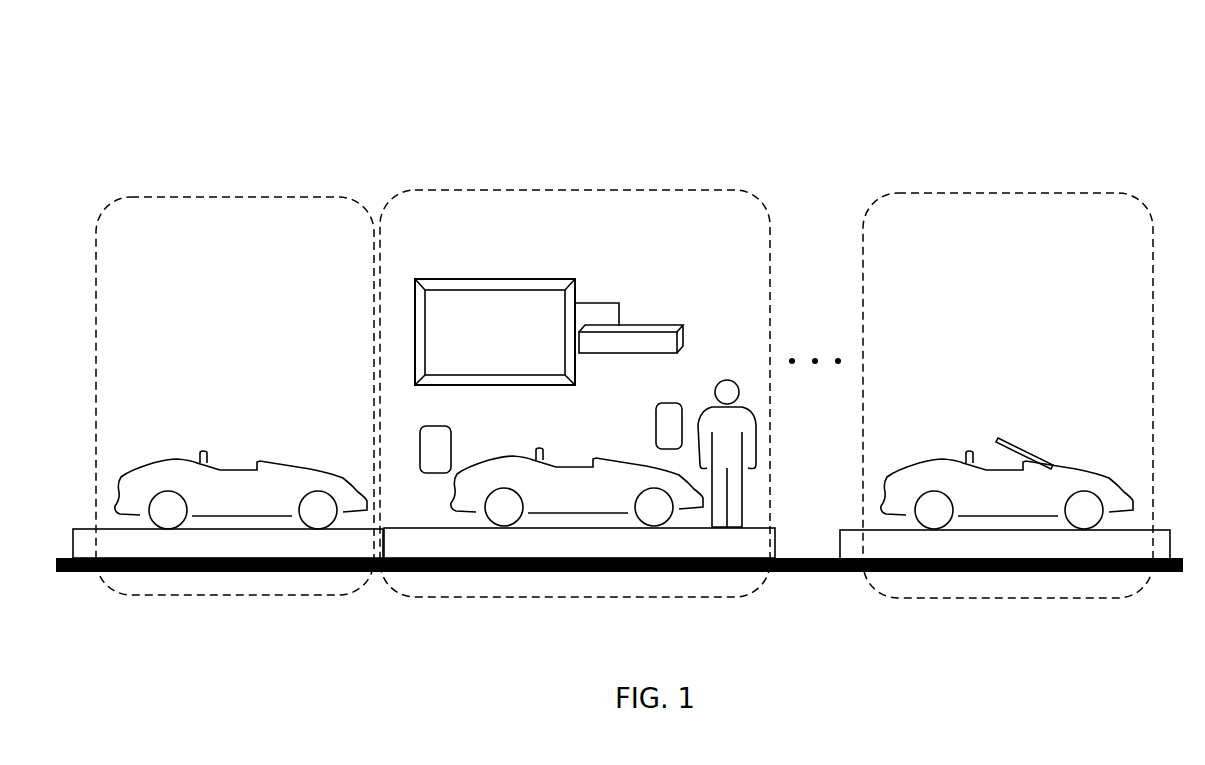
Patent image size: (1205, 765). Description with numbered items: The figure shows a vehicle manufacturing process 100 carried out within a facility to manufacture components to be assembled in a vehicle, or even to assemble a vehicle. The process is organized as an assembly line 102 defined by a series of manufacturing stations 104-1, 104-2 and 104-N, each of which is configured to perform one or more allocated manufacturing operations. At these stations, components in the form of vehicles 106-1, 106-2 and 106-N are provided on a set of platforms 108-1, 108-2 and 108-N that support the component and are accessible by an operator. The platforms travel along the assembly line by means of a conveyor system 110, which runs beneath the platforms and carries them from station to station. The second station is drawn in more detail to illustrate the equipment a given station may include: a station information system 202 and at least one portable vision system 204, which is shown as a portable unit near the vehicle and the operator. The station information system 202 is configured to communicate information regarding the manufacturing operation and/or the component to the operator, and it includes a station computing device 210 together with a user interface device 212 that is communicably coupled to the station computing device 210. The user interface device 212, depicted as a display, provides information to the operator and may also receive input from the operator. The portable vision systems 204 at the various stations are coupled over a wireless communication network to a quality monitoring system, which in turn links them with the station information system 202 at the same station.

The vehicle manufacturing process 100 is at (250, 76).
The assembly line 102 is at (294, 606).
The manufacturing station 104-1 is at (200, 197).
The manufacturing station 104-2 is at (528, 190).
The manufacturing station 104-N is at (1005, 193).
The vehicle 106-1 is at (311, 469).
The vehicle 106-2 is at (583, 463).
The vehicle 106-N is at (1078, 469).
The platform 108-1 is at (103, 543).
The platform 108-2 is at (422, 545).
The platform 108-N is at (983, 550).
The conveyor system 110 is at (803, 572).
The station information system 202 is at (592, 285).
The portable vision system 204 is at (657, 410).
The station computing device 210 is at (678, 337).
The user interface device 212 is at (443, 279).